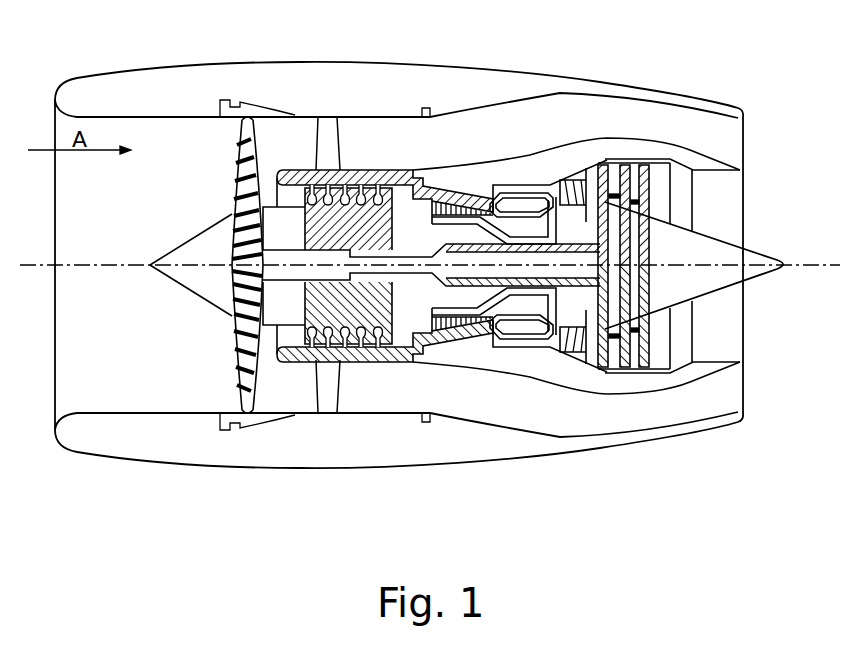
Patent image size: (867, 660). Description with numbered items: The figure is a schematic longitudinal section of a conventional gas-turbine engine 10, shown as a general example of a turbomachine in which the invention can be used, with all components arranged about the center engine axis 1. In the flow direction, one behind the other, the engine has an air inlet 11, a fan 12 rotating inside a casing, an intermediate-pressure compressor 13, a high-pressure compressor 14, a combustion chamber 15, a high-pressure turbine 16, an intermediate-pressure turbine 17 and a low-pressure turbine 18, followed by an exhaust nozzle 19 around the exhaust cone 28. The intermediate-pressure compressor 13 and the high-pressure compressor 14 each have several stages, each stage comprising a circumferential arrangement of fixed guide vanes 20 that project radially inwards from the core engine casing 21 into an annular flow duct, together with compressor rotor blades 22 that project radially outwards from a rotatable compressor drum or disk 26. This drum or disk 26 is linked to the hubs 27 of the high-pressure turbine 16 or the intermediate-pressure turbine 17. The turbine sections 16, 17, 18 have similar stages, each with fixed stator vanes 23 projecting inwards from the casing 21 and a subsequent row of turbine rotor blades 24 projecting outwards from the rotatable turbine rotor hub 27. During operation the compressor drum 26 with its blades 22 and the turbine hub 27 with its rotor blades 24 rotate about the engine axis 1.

The engine axis 1 is at (126, 268).
The gas-turbine engine 10 is at (535, 130).
The air inlet 11 is at (174, 139).
The fan 12 is at (243, 138).
The intermediate-pressure compressor 13 is at (378, 272).
The high-pressure compressor 14 is at (462, 217).
The combustion chamber 15 is at (521, 204).
The high-pressure turbine 16 is at (553, 180).
The intermediate-pressure turbine 17 is at (620, 279).
The low-pressure turbine 18 is at (657, 159).
The exhaust nozzle 19 is at (680, 200).
The guide vanes 20 is at (324, 325).
The core engine casing 21 is at (352, 325).
The compressor rotor blades 22 is at (406, 325).
The stator vanes 23 is at (600, 358).
The turbine rotor blades 24 is at (613, 356).
The compressor drum or disk 26 is at (500, 330).
The turbine rotor hub 27 is at (600, 278).
The exhaust cone 28 is at (743, 257).